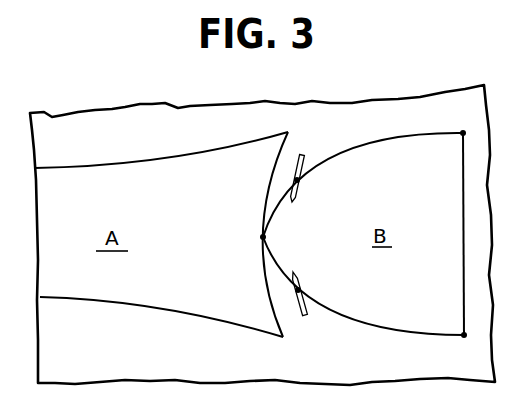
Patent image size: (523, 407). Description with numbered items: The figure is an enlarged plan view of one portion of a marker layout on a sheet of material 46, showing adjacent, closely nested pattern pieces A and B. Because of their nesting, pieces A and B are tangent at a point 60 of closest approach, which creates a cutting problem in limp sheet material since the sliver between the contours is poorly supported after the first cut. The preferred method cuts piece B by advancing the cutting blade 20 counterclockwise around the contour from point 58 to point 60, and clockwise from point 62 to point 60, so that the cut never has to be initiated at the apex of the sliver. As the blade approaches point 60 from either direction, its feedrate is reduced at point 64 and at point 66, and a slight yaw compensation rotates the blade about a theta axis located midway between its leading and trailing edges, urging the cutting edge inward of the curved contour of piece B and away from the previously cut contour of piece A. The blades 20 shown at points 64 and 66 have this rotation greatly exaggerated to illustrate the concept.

The sheet of material 46 is at (130, 115).
The cutting blade 20 is at (304, 158).
The point 58 is at (461, 136).
The point of closest approach 60 is at (261, 237).
The point 62 is at (462, 333).
The point 64 is at (300, 182).
The point 66 is at (300, 290).